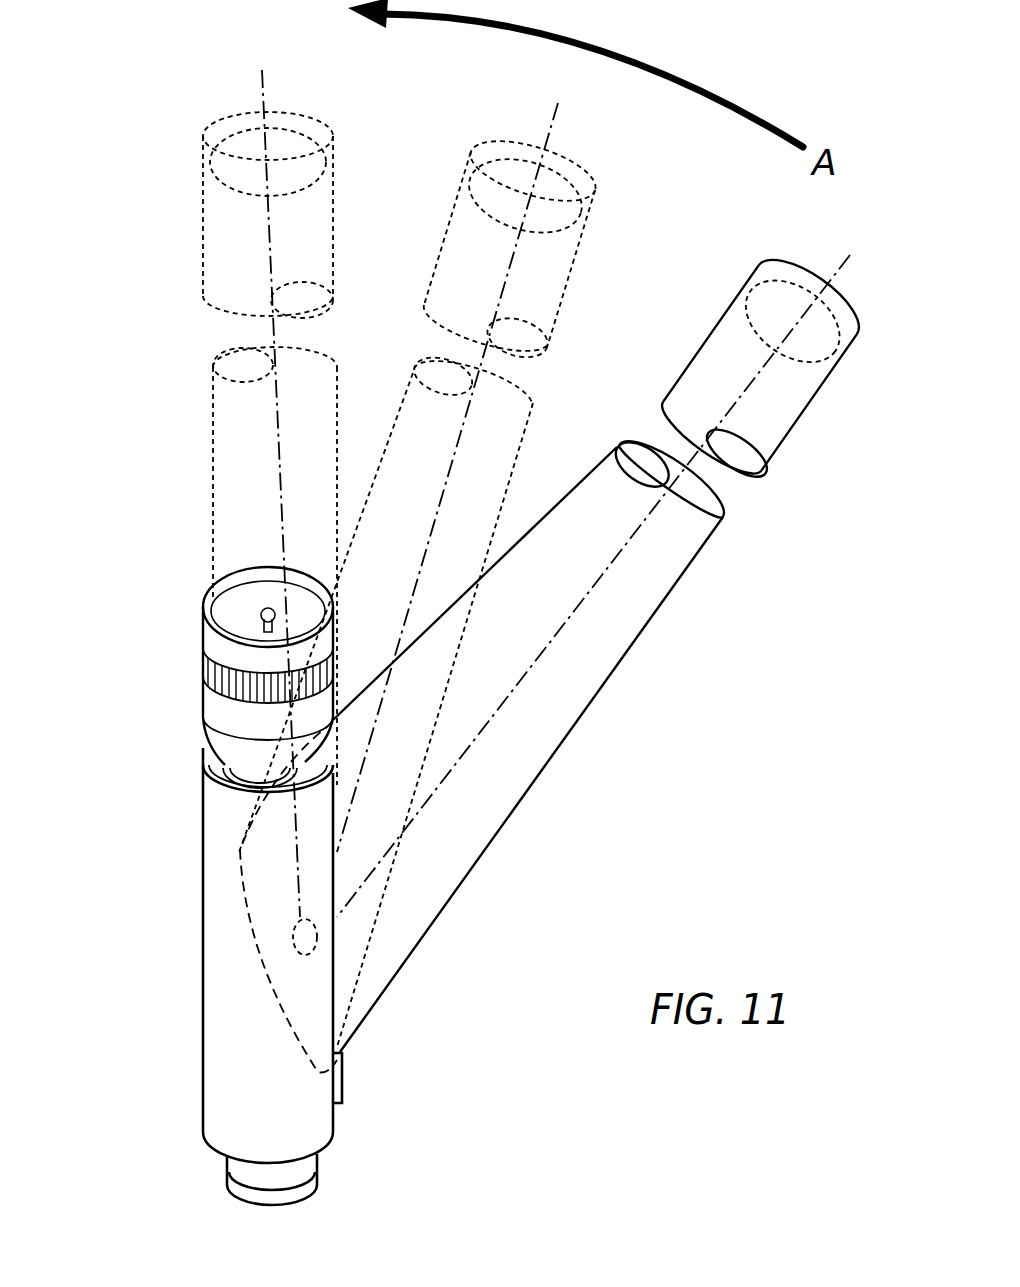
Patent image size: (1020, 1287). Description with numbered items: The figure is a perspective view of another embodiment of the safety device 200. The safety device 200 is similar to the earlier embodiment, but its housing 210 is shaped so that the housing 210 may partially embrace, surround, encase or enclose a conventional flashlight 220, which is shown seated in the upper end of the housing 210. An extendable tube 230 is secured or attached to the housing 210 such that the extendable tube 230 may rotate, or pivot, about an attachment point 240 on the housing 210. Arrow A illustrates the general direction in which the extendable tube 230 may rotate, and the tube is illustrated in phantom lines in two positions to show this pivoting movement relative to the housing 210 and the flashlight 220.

The safety device 200 is at (90, 97).
The housing 210 is at (203, 1121).
The conventional flashlight 220 is at (203, 703).
The extendable tube 230 is at (817, 397).
The attachment point 240 is at (293, 940).